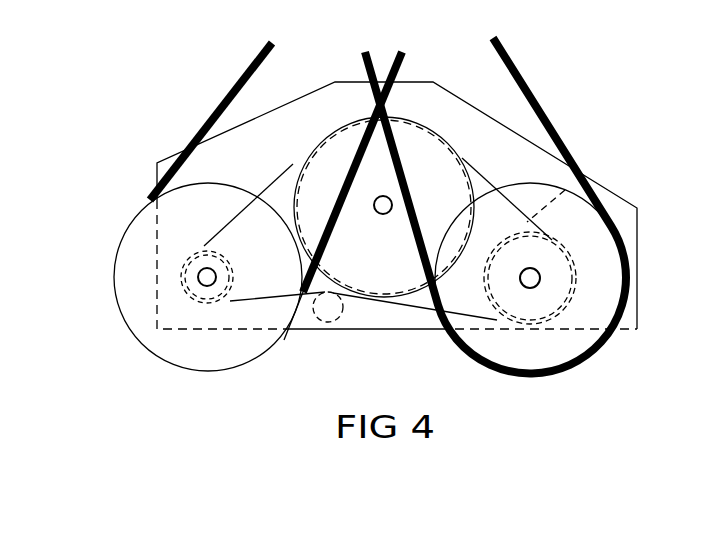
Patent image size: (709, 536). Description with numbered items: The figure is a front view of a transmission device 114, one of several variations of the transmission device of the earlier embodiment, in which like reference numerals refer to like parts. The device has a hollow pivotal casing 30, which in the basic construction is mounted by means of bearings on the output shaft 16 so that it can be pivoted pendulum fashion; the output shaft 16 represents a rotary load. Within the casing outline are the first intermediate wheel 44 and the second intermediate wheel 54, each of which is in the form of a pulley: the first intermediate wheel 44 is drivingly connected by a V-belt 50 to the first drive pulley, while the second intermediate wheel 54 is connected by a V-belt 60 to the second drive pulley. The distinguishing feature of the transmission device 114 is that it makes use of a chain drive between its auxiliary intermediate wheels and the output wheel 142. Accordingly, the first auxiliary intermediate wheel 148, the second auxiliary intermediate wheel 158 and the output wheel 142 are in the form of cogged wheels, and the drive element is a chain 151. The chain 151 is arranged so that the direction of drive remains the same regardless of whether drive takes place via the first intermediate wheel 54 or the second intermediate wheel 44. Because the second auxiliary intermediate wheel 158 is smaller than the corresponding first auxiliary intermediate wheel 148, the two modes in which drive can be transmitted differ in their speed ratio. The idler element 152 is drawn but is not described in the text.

The transmission device 114 is at (162, 96).
The V-belt 60 is at (222, 97).
The V-belt 50 is at (530, 82).
The output wheel 142 is at (434, 163).
The pivotal casing 30 is at (522, 153).
The chain 151 is at (576, 182).
The second intermediate wheel 54 is at (134, 258).
The first intermediate wheel 44 is at (598, 263).
The output shaft 16 is at (386, 214).
The idler 152 is at (342, 306).
The second auxiliary intermediate wheel 158 is at (206, 292).
The first auxiliary intermediate wheel 148 is at (552, 300).